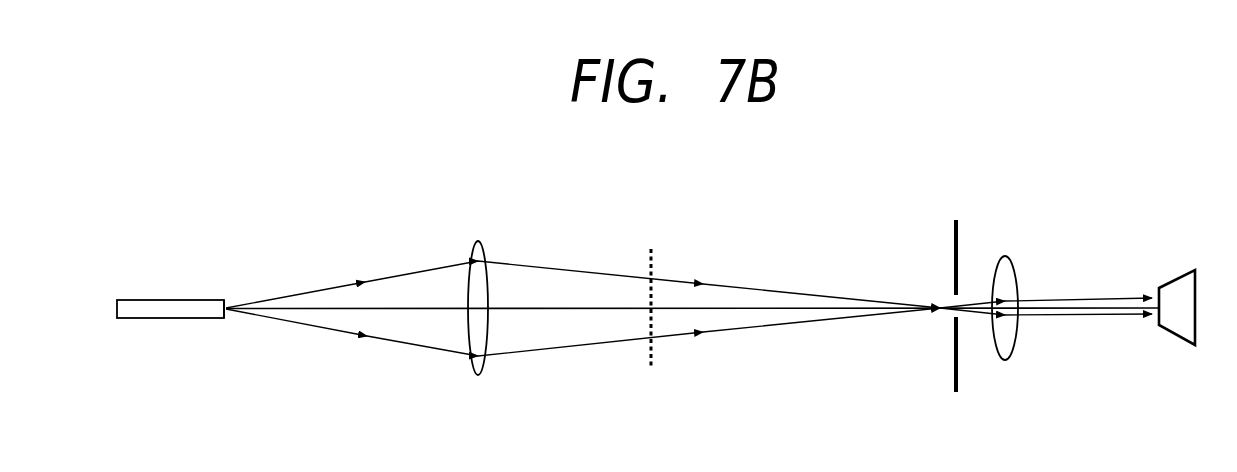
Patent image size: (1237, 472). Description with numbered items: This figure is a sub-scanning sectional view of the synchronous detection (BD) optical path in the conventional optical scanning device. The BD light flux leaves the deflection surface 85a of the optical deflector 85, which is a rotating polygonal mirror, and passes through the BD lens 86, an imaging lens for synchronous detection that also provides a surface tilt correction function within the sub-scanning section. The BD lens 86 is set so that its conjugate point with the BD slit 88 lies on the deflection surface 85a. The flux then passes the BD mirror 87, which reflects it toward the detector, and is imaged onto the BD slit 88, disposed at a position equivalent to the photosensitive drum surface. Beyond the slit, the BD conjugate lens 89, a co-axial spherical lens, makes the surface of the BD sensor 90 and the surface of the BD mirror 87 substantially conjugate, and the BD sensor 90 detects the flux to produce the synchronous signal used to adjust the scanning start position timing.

The optical deflector 85 is at (172, 305).
The deflection surface 85a is at (228, 317).
The BD lens 86 is at (483, 245).
The BD mirror 87 is at (652, 258).
The BD slit 88 is at (958, 228).
The BD conjugate lens 89 is at (1008, 268).
The BD sensor 90 is at (1178, 280).